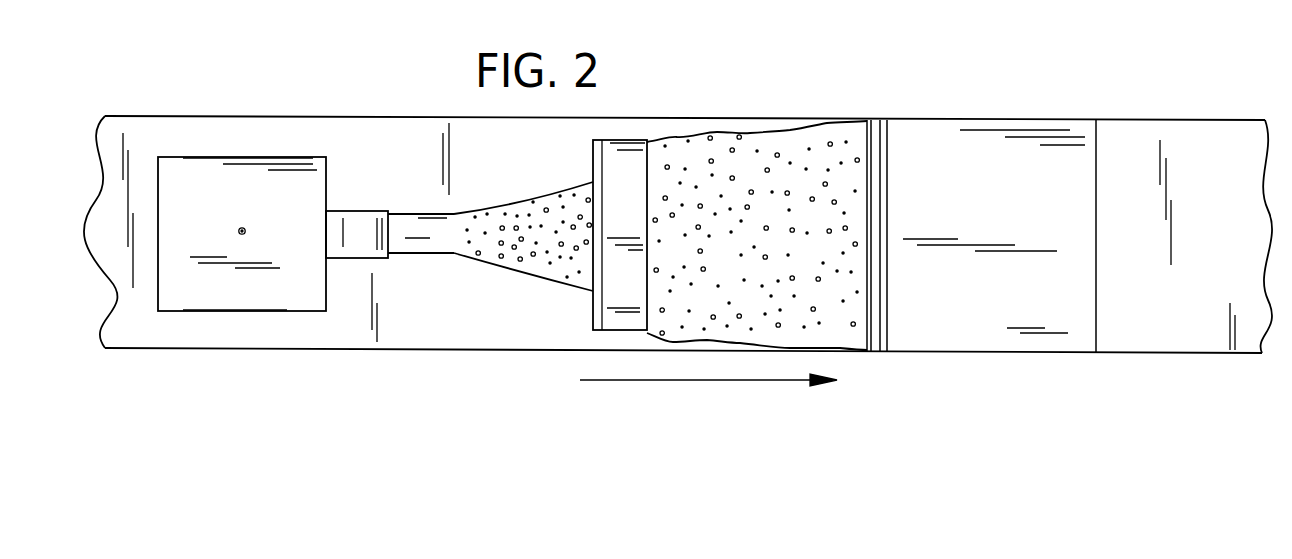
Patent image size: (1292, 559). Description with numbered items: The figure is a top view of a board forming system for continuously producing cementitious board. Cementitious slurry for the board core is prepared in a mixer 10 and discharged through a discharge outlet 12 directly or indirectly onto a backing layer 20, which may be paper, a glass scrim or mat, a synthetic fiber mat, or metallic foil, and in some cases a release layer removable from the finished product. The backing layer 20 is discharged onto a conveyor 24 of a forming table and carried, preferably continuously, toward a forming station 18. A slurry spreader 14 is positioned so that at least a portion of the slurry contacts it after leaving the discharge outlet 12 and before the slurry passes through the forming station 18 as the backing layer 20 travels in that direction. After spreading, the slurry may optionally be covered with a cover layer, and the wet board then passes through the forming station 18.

The mixer 10 is at (198, 237).
The discharge outlet 12 is at (362, 247).
The slurry spreader 14 is at (623, 293).
The forming station 18 is at (947, 110).
The backing layer 20 is at (632, 132).
The conveyor 24 is at (777, 118).